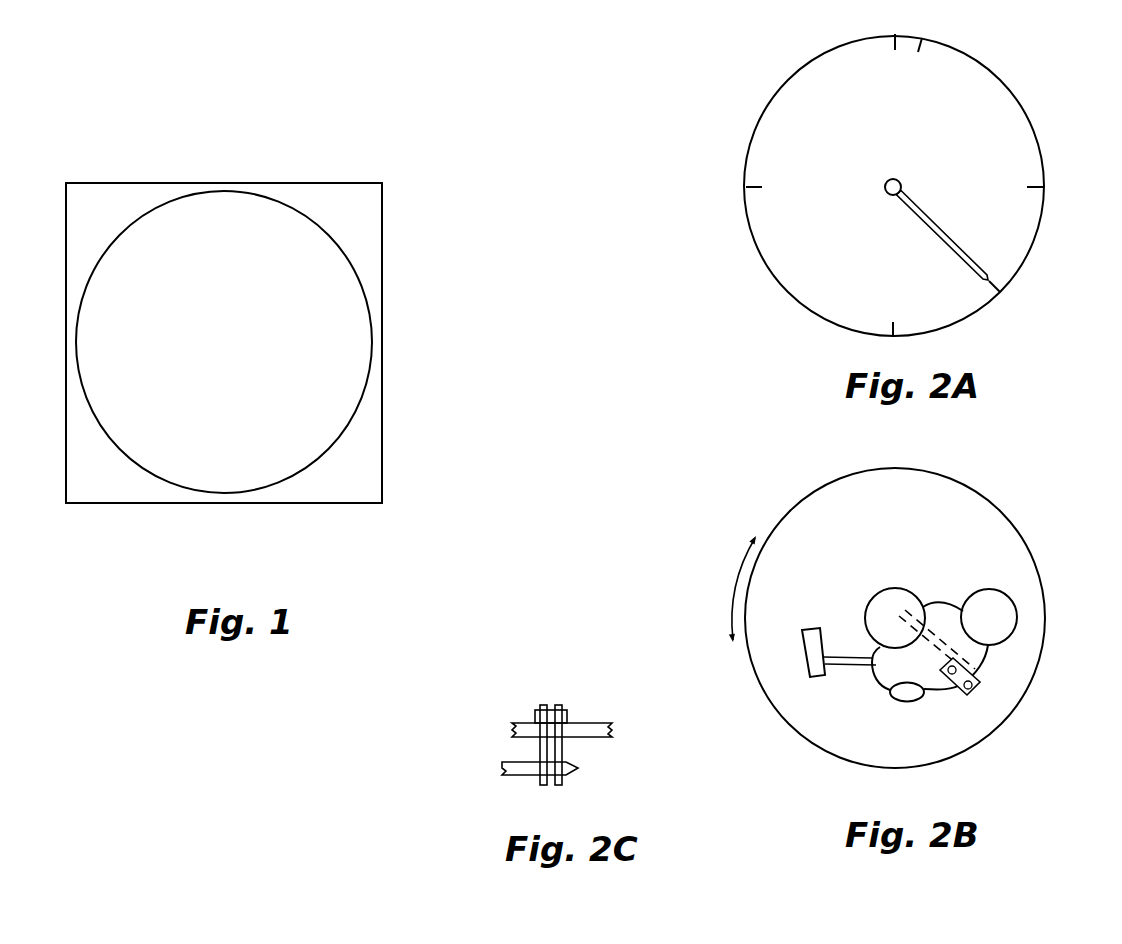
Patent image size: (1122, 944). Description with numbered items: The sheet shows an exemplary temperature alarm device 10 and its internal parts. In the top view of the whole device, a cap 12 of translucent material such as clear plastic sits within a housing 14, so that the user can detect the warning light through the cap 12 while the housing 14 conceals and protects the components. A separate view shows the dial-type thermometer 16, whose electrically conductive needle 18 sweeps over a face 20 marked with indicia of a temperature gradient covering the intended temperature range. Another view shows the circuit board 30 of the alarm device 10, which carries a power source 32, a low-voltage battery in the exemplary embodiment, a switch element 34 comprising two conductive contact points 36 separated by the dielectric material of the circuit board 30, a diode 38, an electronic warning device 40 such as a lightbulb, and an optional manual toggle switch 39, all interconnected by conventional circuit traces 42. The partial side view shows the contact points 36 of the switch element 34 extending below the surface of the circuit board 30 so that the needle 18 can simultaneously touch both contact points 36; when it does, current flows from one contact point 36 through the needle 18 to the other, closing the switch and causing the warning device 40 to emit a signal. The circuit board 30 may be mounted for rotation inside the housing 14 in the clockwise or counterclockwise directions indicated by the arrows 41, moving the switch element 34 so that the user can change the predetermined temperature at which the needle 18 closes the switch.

In FIG. 1, the alarm device 10 is at (278, 338).
In FIG. 1, the cap 12 is at (356, 344).
In FIG. 1, the housing 14 is at (127, 508).
In FIG. 2A, the thermometer 16 is at (752, 230).
In FIG. 2A, the needle 18 is at (956, 242).
In FIG. 2B, the needle 18 is at (986, 694).
In FIG. 2C, the needle 18 is at (523, 775).
In FIG. 2A, the face 20 is at (1005, 127).
In FIG. 2B, the circuit board 30 is at (1020, 538).
In FIG. 2C, the circuit board 30 is at (612, 730).
In FIG. 2B, the power source 32 is at (993, 590).
In FIG. 2B, the switch element 34 is at (978, 700).
In FIG. 2C, the switch element 34 is at (535, 715).
In FIG. 2B, the contact points 36 is at (976, 670).
In FIG. 2C, the contact points 36 is at (543, 707).
In FIG. 2B, the diode 38 is at (892, 698).
In FIG. 2B, the toggle switch 39 is at (810, 630).
In FIG. 2B, the warning device 40 is at (880, 592).
In FIG. 2B, the arrows 41 is at (728, 617).
In FIG. 2B, the circuit traces 42 is at (945, 600).